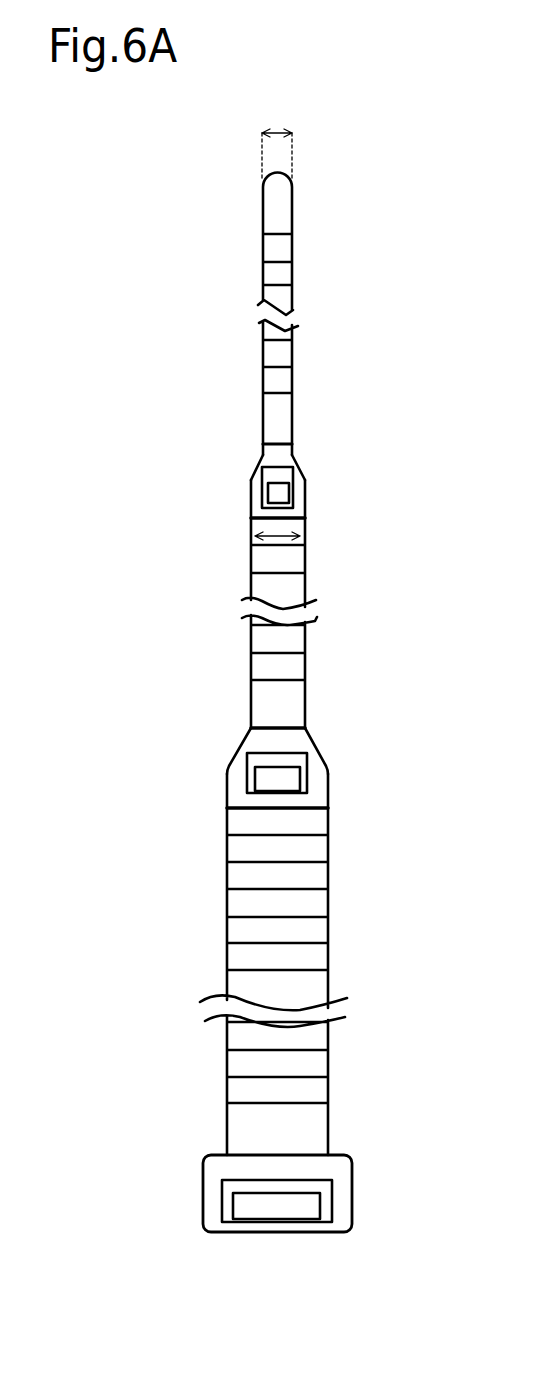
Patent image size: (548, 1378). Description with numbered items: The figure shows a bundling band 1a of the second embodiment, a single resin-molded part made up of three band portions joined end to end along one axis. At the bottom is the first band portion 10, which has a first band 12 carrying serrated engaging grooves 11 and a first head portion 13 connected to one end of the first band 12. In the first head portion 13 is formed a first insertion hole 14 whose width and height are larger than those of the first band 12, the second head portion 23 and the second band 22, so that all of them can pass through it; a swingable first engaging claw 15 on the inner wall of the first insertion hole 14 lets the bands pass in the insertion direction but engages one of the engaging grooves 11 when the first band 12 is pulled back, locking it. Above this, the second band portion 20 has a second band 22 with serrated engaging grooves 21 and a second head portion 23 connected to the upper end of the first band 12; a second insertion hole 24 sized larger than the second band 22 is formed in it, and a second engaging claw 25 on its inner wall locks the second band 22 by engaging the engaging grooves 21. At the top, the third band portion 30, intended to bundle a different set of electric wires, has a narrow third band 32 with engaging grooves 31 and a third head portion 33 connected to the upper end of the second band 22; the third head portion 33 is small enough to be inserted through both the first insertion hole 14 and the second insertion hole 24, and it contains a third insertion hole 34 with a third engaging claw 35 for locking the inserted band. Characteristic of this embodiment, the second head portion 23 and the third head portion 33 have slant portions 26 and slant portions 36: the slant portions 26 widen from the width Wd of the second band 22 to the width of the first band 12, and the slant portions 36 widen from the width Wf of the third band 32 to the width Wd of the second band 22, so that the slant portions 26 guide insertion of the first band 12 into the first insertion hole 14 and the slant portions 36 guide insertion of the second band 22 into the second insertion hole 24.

The bundling band 1a is at (117, 320).
The first band portion 10 is at (348, 810).
The engaging grooves 11 is at (255, 967).
The first band 12 is at (226, 1088).
The first head portion 13 is at (350, 1157).
The first insertion hole 14 is at (335, 1194).
The first engaging claw 15 is at (305, 1212).
The second band portion 20 is at (348, 520).
The engaging grooves 21 is at (268, 678).
The second band 22 is at (251, 552).
The second head portion 23 is at (253, 737).
The second insertion hole 24 is at (246, 779).
The second engaging claw 25 is at (308, 774).
The slant portions 26 is at (318, 748).
The third band portion 30 is at (347, 177).
The engaging grooves 31 is at (263, 390).
The third band 32 is at (263, 272).
The third head portion 33 is at (268, 466).
The third insertion hole 34 is at (251, 484).
The third engaging claw 35 is at (297, 490).
The slant portions 36 is at (300, 464).
The width of the third band Wf is at (277, 131).
The width of the second band Wd is at (282, 537).